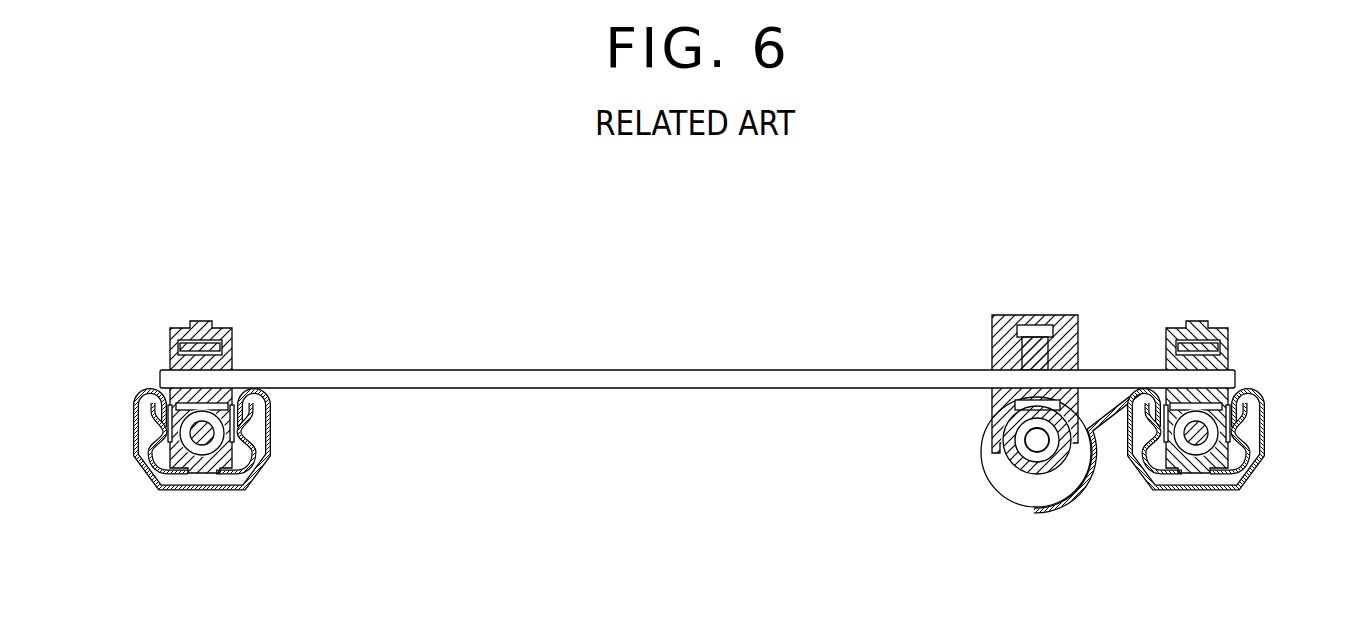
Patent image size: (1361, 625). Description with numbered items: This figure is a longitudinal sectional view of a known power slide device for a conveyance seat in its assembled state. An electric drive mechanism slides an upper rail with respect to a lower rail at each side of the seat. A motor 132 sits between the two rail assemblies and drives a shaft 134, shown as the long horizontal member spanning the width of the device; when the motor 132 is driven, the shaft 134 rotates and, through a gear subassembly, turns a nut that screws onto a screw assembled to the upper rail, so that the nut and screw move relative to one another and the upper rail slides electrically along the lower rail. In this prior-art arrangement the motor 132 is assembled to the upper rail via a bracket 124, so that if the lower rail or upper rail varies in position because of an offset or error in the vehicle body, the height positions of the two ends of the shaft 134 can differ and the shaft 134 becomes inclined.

The bracket 124 is at (1082, 490).
The motor 132 is at (998, 473).
The shaft 134 is at (720, 370).